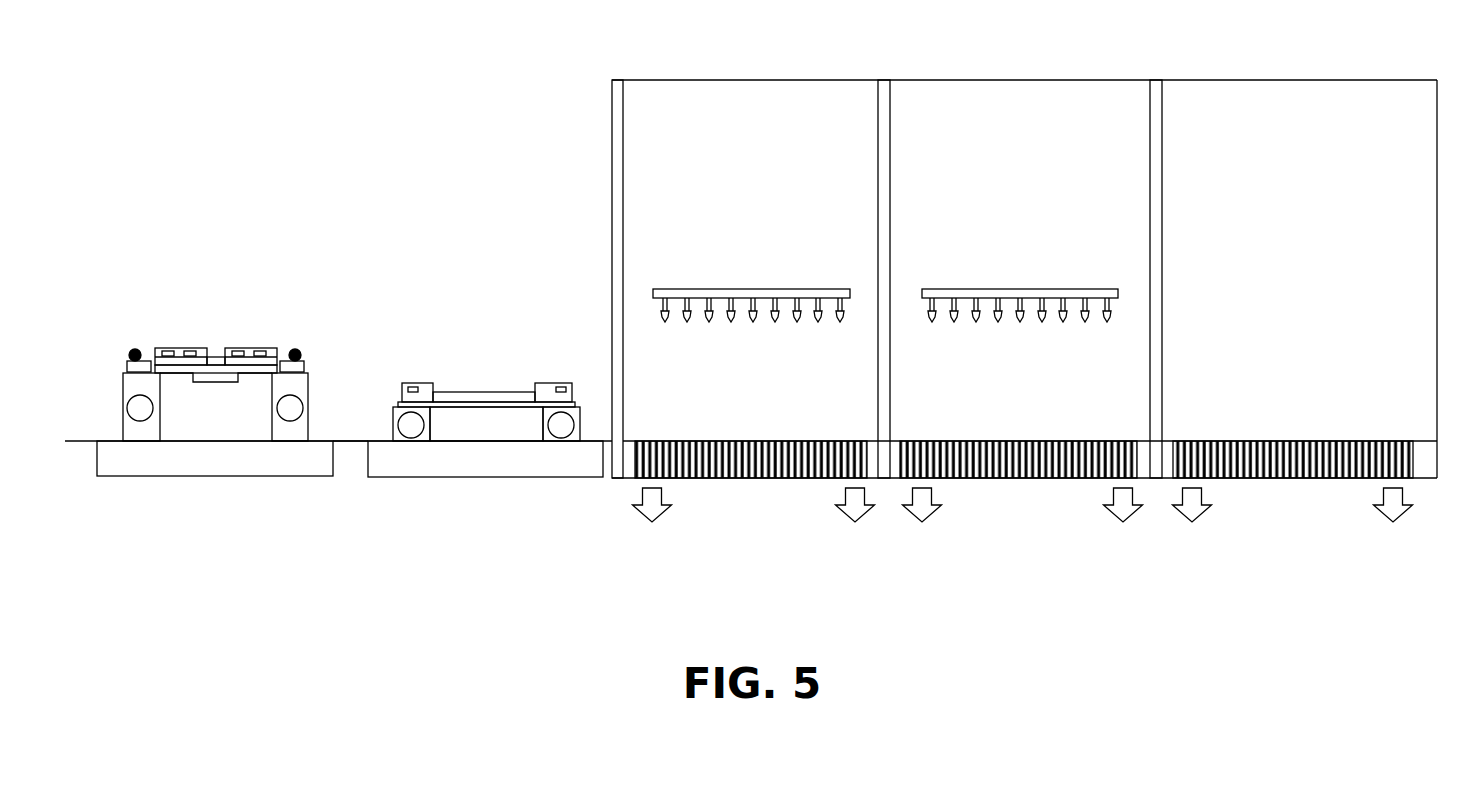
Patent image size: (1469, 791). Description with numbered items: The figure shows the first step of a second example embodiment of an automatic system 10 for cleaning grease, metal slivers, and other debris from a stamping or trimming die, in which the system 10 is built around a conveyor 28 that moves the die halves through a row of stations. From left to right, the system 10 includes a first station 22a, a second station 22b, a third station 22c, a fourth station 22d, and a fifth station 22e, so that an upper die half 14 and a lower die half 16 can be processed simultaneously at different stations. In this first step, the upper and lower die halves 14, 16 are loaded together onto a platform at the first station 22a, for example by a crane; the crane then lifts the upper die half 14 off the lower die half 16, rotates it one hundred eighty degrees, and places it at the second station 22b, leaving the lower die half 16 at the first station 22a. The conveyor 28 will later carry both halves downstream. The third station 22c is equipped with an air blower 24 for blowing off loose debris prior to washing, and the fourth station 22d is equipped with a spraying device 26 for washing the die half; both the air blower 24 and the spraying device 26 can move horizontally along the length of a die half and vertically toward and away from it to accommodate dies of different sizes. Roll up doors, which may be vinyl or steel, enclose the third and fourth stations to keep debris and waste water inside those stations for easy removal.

The automatic system 10 is at (316, 106).
The upper die half 14 is at (393, 430).
The lower die half 16 is at (298, 381).
The first station 22a is at (240, 477).
The second station 22b is at (467, 477).
The third station 22c is at (748, 478).
The fourth station 22d is at (1033, 478).
The fifth station 22e is at (1267, 478).
The air blower 24 is at (785, 289).
The spraying device 26 is at (1003, 289).
The conveyor 28 is at (347, 477).